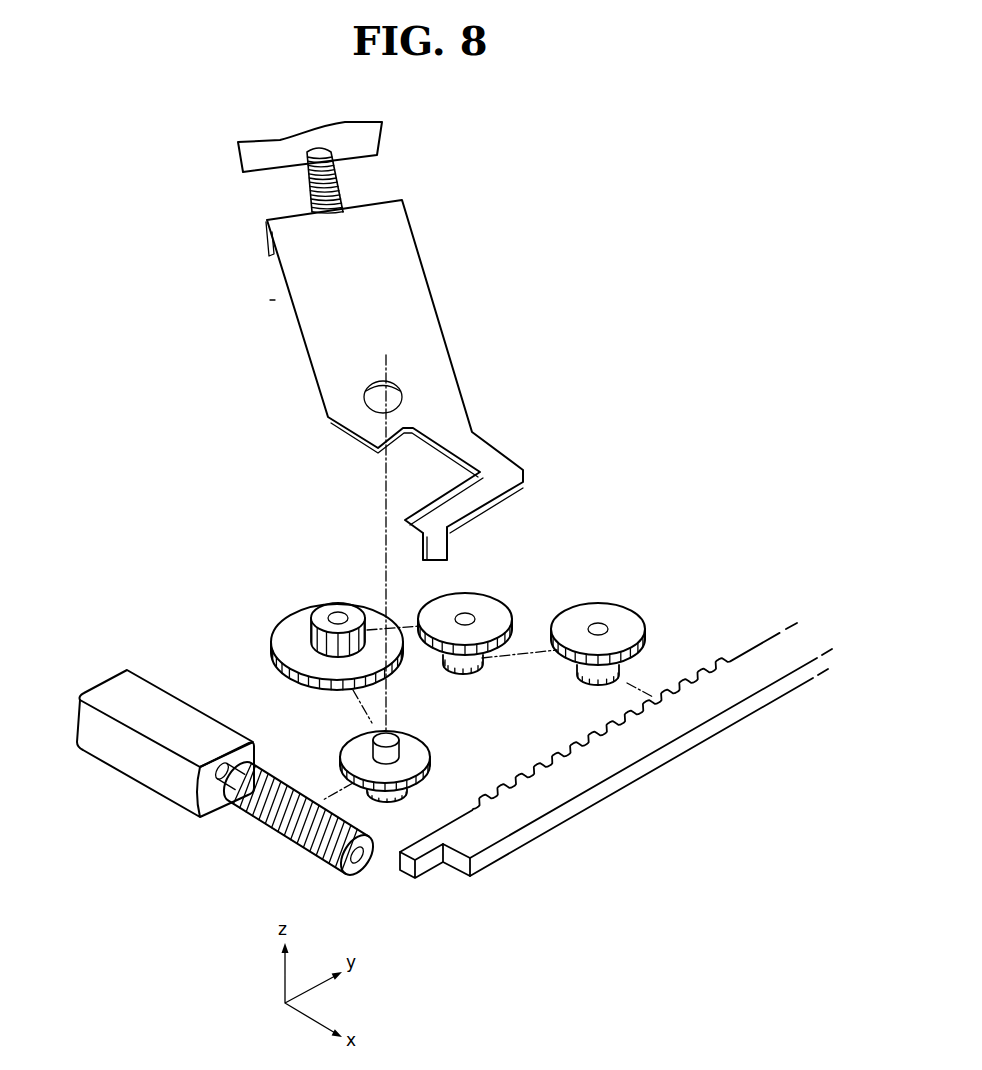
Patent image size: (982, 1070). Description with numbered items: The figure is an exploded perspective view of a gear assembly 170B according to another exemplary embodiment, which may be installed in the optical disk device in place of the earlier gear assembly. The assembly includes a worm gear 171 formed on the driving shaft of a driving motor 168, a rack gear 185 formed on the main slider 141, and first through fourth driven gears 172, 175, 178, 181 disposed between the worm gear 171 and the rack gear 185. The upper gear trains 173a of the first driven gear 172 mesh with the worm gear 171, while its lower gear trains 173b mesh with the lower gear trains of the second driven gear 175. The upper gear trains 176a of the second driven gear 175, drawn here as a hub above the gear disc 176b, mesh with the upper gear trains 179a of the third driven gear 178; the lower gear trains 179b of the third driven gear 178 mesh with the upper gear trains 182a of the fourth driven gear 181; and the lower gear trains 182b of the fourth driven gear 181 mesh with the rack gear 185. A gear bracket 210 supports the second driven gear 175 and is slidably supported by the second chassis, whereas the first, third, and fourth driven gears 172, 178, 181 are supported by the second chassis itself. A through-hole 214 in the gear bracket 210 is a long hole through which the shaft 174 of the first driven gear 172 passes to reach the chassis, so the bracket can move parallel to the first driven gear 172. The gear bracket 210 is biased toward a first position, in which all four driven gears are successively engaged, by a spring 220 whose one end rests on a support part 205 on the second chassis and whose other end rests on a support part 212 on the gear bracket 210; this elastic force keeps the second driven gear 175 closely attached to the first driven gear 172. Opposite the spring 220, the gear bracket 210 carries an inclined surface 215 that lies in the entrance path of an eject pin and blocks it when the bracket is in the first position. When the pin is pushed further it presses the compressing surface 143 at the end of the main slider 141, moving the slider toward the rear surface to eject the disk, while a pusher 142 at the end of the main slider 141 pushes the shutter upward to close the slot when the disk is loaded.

The gear assembly 170B is at (160, 200).
The support part 205 is at (382, 133).
The spring 220 is at (343, 188).
The gear bracket 210 is at (368, 403).
The support part 212 is at (268, 245).
The through-hole 214 is at (398, 400).
The inclined surface 215 is at (442, 549).
The second driven gear 175 is at (297, 630).
The upper gear trains 176a is at (317, 617).
The gear disc of worm wheel 176b is at (277, 637).
The first driven gear 172 is at (386, 762).
The upper gear trains 173a is at (433, 765).
The lower gear trains 173b is at (401, 798).
The shaft 174 is at (398, 752).
The third driven gear 178 is at (482, 637).
The upper gear trains 179a is at (480, 670).
The lower gear trains 179b is at (453, 665).
The fourth driven gear 181 is at (592, 642).
The upper gear trains 182a is at (565, 667).
The lower gear trains 182b is at (595, 683).
The main slider 141 is at (594, 773).
The pusher 142 is at (405, 870).
The compressing surface 143 is at (462, 860).
The rack gear 185 is at (538, 772).
The driving motor 168 is at (135, 765).
The worm gear 171 is at (267, 828).